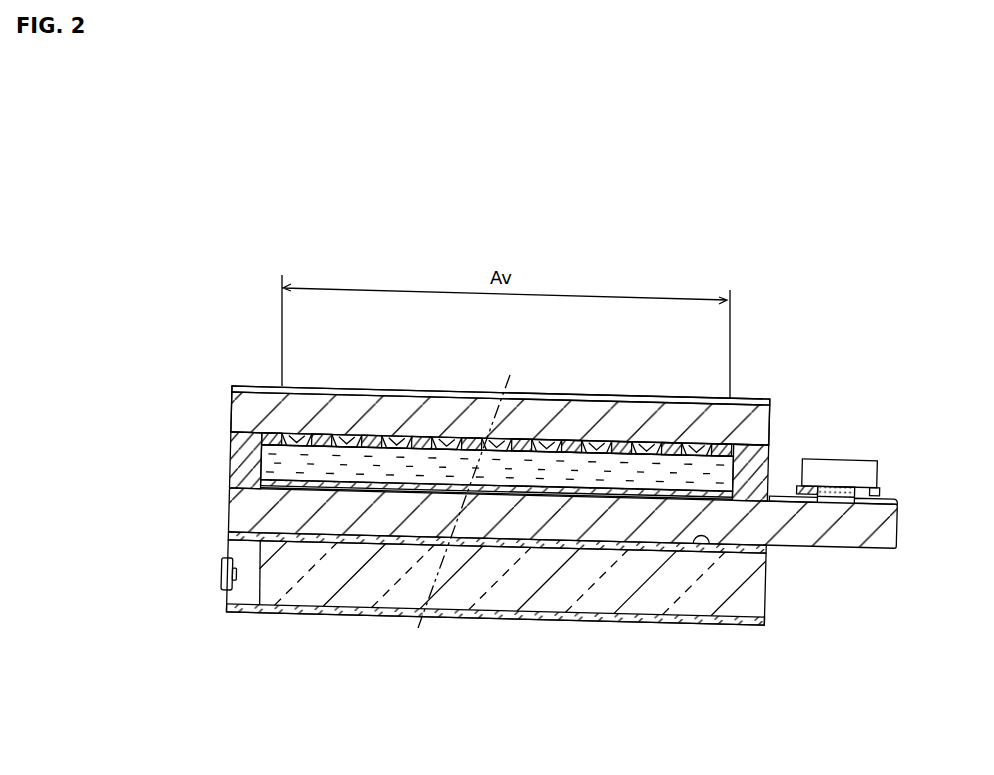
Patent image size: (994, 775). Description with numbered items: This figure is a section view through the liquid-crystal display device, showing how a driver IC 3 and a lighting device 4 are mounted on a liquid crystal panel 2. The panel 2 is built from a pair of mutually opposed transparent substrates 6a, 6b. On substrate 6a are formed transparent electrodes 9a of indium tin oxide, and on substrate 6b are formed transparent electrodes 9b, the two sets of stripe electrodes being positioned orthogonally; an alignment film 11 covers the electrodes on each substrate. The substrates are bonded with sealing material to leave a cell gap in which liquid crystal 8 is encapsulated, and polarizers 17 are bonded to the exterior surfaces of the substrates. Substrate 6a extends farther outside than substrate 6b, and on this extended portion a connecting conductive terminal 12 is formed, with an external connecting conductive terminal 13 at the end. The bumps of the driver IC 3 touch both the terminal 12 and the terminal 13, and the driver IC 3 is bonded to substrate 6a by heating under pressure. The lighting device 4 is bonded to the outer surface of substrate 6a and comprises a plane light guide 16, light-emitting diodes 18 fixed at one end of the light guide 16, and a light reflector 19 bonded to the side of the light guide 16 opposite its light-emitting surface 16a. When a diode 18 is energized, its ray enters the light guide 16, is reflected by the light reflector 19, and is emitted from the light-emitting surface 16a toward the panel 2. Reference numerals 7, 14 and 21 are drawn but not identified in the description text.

The liquid crystal panel 2 is at (184, 390).
The driver IC 3 is at (842, 468).
The lighting device 4 is at (183, 528).
The transparent substrate 6a is at (236, 508).
The transparent substrate 6b is at (238, 412).
The liquid crystal layer 7 is at (238, 458).
The liquid crystal 8 is at (382, 462).
The transparent electrodes 9a is at (657, 500).
The transparent electrodes 9b is at (592, 440).
The alignment film 11 is at (447, 440).
The connecting conductive terminal 12 is at (780, 497).
The external connecting conductive terminal 13 is at (887, 499).
The anisotropic conductive film 14 is at (880, 495).
The light guide 16 is at (382, 613).
The light-emitting surface 16a is at (710, 553).
The polarizers 17 is at (328, 388).
The light-emitting diodes 18 is at (222, 582).
The light reflector 19 is at (467, 617).
The frame 21 is at (260, 583).